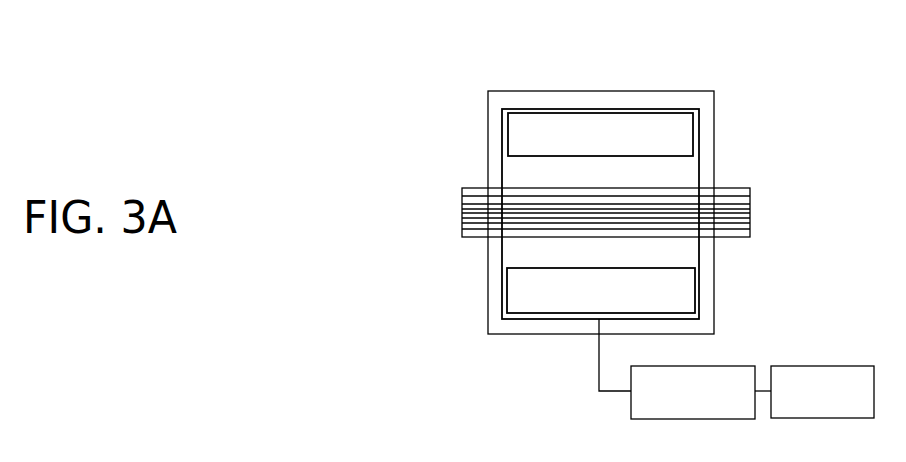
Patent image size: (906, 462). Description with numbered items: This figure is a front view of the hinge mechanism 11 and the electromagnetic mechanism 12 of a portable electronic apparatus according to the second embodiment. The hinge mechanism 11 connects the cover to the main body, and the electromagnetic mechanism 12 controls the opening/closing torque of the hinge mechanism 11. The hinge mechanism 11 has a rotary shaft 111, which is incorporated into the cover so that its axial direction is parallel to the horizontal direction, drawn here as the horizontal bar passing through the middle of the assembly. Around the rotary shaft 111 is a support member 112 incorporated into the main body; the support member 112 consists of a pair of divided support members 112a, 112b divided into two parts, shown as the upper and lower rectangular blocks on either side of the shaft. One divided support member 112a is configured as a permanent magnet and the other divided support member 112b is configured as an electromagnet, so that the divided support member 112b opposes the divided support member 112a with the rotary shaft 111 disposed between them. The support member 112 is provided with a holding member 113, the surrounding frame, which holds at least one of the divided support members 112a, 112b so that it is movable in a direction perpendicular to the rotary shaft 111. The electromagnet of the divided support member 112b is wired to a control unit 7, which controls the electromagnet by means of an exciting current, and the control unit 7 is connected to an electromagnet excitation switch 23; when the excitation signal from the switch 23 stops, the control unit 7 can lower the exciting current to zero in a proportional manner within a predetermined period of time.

The hinge mechanism 11 is at (647, 68).
The rotary shaft 111 is at (733, 188).
The support member 112 is at (603, 110).
The divided support member 112a is at (536, 118).
The divided support member 112b is at (537, 311).
The holding member 113 is at (487, 141).
The electromagnetic mechanism 12 is at (573, 362).
The control unit 7 is at (733, 366).
The electromagnet excitation switch 23 is at (842, 366).